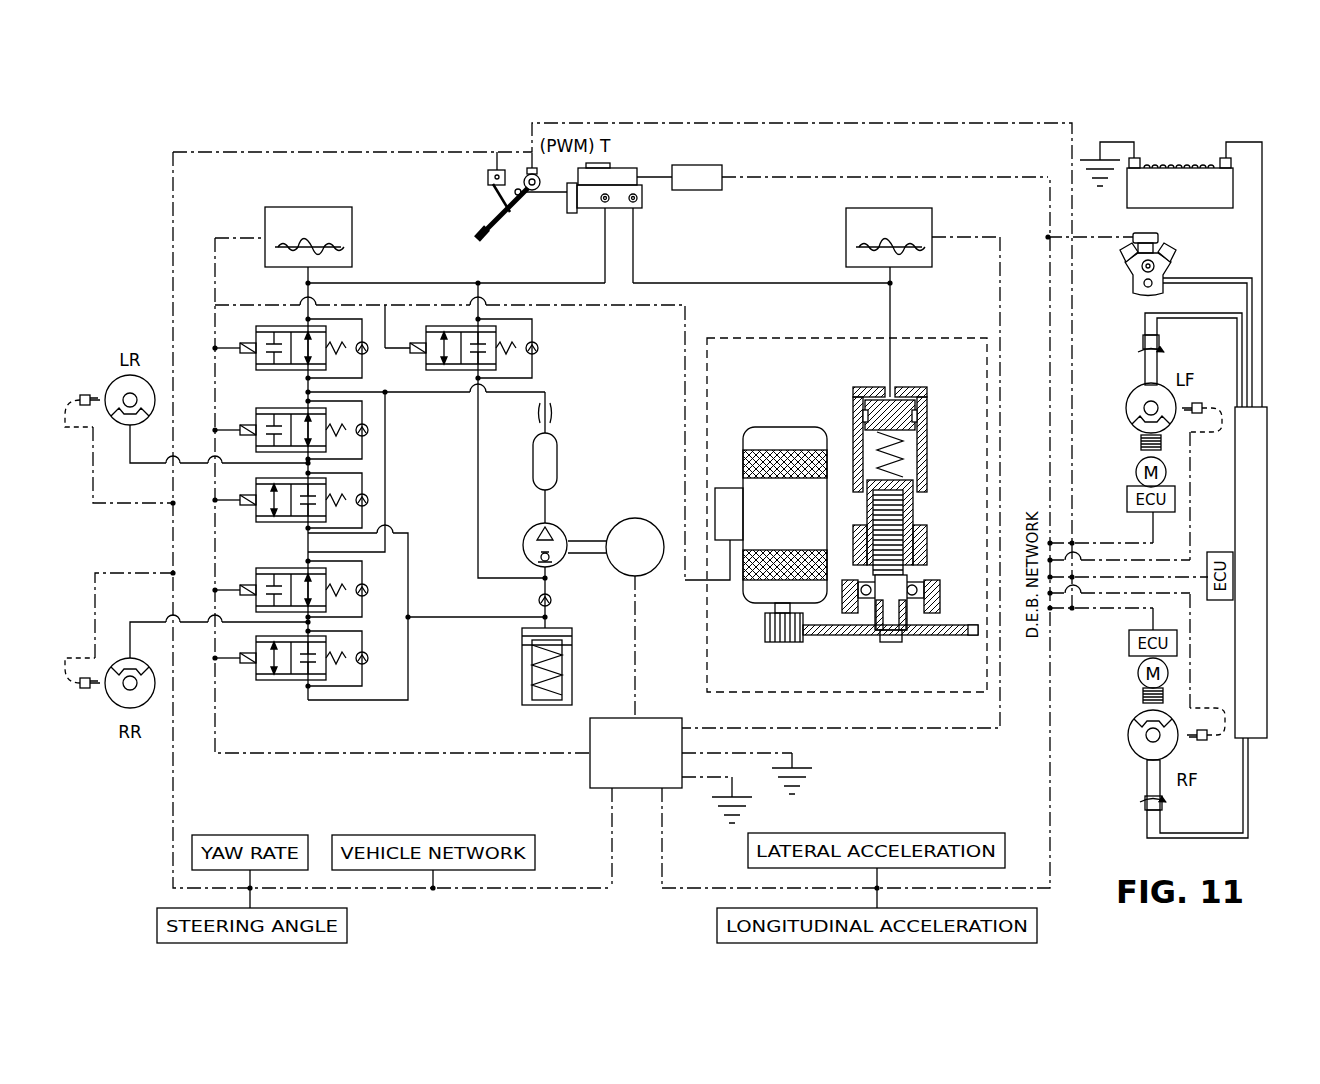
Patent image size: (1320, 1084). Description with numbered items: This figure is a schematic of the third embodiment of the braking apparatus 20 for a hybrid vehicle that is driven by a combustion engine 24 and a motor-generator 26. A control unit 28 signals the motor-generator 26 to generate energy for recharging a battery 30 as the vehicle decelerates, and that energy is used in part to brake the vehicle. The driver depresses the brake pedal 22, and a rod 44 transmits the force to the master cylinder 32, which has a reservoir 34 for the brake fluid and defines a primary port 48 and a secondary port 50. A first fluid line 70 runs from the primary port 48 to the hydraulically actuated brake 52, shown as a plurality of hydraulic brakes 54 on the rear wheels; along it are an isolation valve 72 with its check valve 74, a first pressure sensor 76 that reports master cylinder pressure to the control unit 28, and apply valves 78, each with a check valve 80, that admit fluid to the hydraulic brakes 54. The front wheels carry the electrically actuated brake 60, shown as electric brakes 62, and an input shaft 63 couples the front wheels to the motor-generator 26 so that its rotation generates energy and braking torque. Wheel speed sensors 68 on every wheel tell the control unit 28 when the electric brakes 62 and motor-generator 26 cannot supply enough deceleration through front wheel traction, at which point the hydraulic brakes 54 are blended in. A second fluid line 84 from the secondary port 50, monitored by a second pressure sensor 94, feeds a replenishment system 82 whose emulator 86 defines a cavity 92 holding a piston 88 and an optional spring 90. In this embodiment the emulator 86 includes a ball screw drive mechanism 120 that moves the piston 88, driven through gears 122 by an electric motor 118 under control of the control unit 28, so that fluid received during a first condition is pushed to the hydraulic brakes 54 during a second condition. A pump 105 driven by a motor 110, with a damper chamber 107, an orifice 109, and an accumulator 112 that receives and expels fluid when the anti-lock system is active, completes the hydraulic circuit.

The braking apparatus 20 is at (126, 190).
The brake pedal 22 is at (490, 222).
The combustion engine 24 is at (1168, 256).
The motor-generator 26 is at (1268, 710).
The control unit 28 is at (590, 770).
The battery 30 is at (1178, 172).
The master cylinder 32 is at (592, 210).
The reservoir 34 is at (628, 172).
The rod 44 is at (518, 205).
The primary port 48 is at (612, 205).
The secondary port 50 is at (650, 198).
The hydraulically actuated brake 52 is at (128, 512).
The hydraulic brakes 54 is at (126, 430).
The electrically actuated brake 60 is at (1122, 455).
The electric brakes 62 is at (1137, 438).
The input shaft 63 is at (1145, 378).
The wheel speed sensors 68 is at (84, 395).
The first fluid line 70 is at (300, 297).
The isolation valve 72 is at (257, 335).
The check valve 74 is at (366, 356).
The first pressure sensor 76 is at (330, 207).
The apply valves 78 is at (262, 412).
The check valve 80 is at (366, 433).
The replenishment system 82 is at (790, 338).
The second fluid line 84 is at (830, 283).
The emulator 86 is at (863, 432).
The piston 88 is at (912, 395).
The spring 90 is at (912, 468).
The cavity 92 is at (857, 392).
The second pressure sensor 94 is at (846, 222).
The pump 105 is at (525, 540).
The damper chamber 107 is at (558, 458).
The orifice 109 is at (551, 408).
The pump motor 110 is at (658, 572).
The accumulator 112 is at (522, 690).
The electric motor 118 is at (758, 430).
The ball screw drive mechanism 120 is at (918, 535).
The gears 122 is at (821, 636).